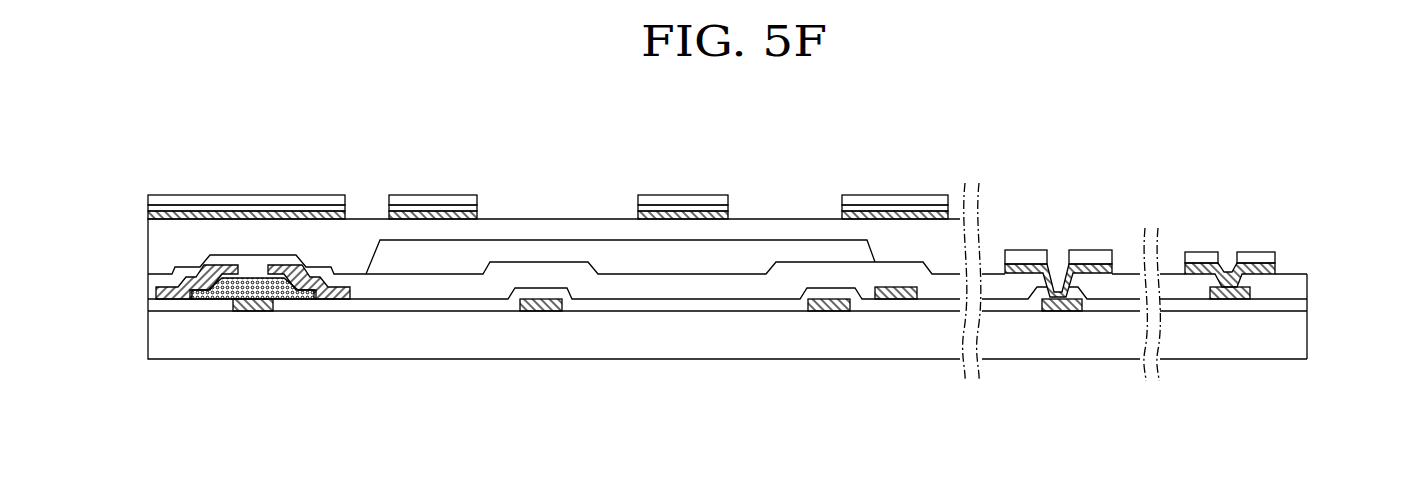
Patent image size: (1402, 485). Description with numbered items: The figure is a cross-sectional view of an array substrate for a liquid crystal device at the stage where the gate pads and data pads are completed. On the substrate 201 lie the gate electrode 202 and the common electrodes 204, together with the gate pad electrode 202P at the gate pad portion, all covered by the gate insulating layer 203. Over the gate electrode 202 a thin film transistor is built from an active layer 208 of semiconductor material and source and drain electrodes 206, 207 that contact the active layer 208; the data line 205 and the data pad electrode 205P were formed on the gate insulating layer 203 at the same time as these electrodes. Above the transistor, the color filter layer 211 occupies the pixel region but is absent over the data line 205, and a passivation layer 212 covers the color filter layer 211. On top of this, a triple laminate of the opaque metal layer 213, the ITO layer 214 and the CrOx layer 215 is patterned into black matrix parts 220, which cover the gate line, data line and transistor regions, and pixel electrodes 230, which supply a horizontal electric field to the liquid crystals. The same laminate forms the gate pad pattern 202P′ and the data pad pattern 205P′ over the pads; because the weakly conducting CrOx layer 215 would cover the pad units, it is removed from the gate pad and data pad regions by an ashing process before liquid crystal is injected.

The substrate 201 is at (1295, 335).
The gate electrode 202 is at (255, 312).
The gate insulating layer 203 is at (1295, 307).
The common electrode 204 is at (545, 312).
The data line 205 is at (895, 287).
The source electrode 206 is at (217, 262).
The drain electrode 207 is at (279, 262).
The active layer 208 is at (208, 300).
The color filter layer 211 is at (703, 255).
The passivation layer 212 is at (955, 219).
The opaque metal layer 213 is at (148, 221).
The ITO layer 214 is at (148, 208).
The CrOx layer 215 is at (148, 199).
The black matrix part 220 is at (517, 186).
The pixel electrode 230 is at (467, 191).
The gate pad electrode 202P is at (1058, 312).
The data pad electrode 205P is at (1235, 299).
The gate pad pattern 202P′ is at (1052, 239).
The data pad pattern 205P′ is at (1218, 239).